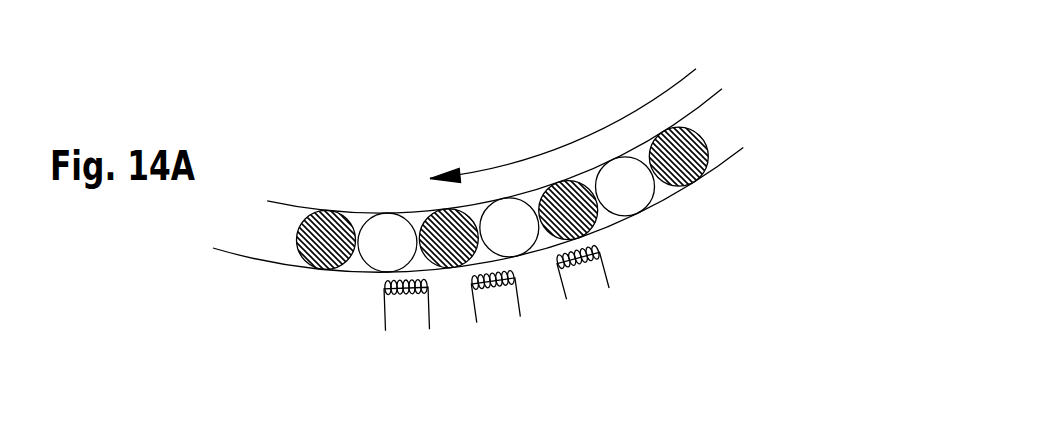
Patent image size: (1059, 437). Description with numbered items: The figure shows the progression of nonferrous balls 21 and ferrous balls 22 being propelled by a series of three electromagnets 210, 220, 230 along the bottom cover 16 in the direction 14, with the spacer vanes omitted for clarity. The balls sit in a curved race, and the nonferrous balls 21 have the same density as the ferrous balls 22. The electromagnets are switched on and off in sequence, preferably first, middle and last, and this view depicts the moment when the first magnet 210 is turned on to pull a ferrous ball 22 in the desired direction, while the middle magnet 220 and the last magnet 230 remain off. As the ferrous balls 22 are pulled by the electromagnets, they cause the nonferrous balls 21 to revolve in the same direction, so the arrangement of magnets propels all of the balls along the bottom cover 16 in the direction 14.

The direction 14 is at (592, 133).
The bottom cover 16 is at (738, 175).
The nonferrous balls 21 is at (387, 230).
The ferrous balls 22 is at (307, 250).
The first magnet 210 is at (395, 308).
The middle magnet 220 is at (495, 303).
The last magnet 230 is at (587, 283).